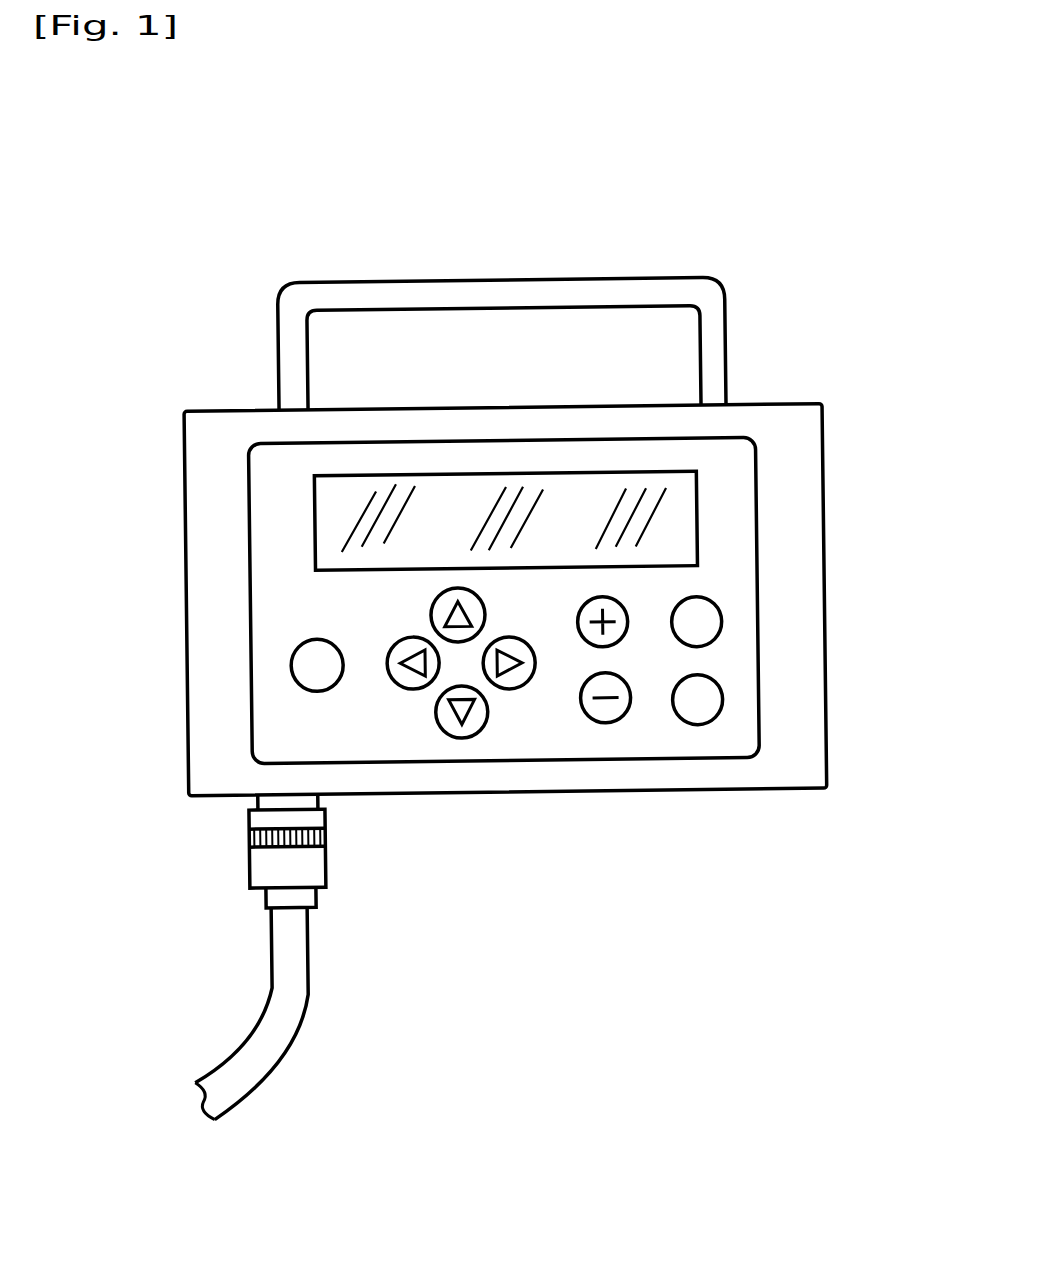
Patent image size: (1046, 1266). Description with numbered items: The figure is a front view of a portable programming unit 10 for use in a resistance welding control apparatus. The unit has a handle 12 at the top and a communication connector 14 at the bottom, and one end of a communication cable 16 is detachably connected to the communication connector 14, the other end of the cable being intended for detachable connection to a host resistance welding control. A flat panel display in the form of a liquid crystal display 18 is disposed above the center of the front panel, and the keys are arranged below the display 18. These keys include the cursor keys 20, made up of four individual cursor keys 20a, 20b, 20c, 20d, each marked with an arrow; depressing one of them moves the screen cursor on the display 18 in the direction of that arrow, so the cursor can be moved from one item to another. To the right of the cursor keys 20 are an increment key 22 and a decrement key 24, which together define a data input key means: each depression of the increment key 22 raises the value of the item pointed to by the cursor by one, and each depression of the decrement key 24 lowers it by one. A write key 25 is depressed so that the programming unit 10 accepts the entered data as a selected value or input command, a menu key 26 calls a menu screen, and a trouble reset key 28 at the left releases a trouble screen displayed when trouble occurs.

The programming unit 10 is at (795, 403).
The handle 12 is at (546, 279).
The communication connector 14 is at (275, 803).
The communication cable 16 is at (298, 1013).
The liquid crystal display 18 is at (452, 478).
The cursor keys 20 is at (349, 709).
The cursor key 20a is at (485, 611).
The cursor key 20b is at (403, 688).
The cursor key 20c is at (462, 738).
The cursor key 20d is at (530, 763).
The increment key 22 is at (627, 603).
The decrement key 24 is at (613, 724).
The write key 25 is at (722, 700).
The menu key 26 is at (722, 621).
The trouble reset key 28 is at (290, 655).